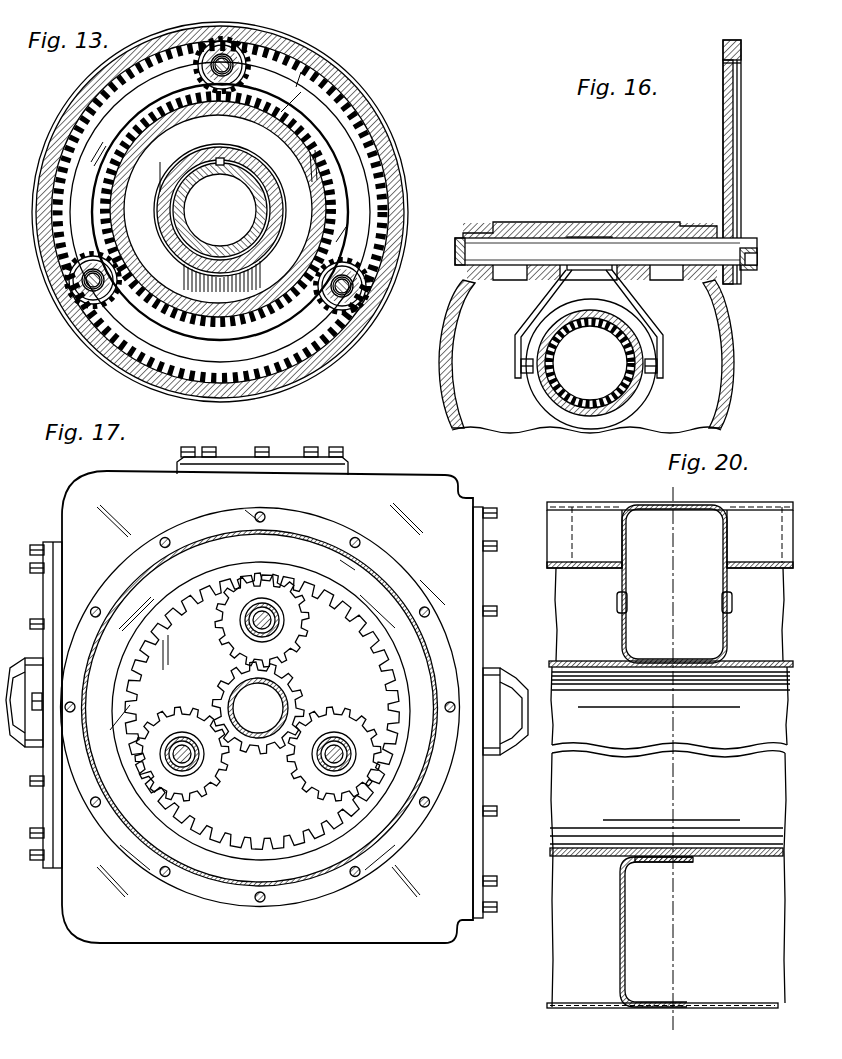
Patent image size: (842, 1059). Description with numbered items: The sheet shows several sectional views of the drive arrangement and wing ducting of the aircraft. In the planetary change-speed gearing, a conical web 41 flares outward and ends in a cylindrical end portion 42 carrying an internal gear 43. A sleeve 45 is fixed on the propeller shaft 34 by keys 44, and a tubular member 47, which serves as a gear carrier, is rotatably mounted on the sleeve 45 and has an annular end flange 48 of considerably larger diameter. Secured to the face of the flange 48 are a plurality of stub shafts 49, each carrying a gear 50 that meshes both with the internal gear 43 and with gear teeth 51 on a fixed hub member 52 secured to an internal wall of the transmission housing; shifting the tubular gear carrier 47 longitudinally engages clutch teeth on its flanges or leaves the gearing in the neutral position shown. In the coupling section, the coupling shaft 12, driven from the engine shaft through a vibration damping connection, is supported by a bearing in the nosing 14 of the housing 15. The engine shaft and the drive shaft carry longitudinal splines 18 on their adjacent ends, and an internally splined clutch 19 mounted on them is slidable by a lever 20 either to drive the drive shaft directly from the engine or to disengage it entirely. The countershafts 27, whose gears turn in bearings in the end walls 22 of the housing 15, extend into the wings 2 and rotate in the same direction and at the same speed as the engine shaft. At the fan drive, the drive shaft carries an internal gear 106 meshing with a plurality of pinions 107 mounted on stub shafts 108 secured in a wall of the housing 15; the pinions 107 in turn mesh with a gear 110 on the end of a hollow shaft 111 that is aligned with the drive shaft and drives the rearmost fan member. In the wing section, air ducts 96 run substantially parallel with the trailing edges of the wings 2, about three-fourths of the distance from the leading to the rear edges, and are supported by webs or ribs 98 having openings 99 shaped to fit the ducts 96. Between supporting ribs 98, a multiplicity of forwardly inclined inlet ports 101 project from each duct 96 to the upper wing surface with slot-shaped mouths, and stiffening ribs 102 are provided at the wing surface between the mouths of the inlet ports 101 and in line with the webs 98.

In FIG. 20, the wings 2 is at (750, 502).
In FIG. 16, the coupling shaft section 12 is at (560, 343).
In FIG. 16, the nosing 14 is at (439, 378).
In FIG. 17, the housing 15 is at (118, 930).
In FIG. 16, the longitudinal splines 18 is at (635, 341).
In FIG. 20, the longitudinal splines 18 is at (673, 495).
In FIG. 16, the internally splined clutch 19 is at (633, 397).
In FIG. 16, the lever 20 is at (725, 166).
In FIG. 17, the end walls 22 is at (48, 870).
In FIG. 17, the countershafts 27 is at (20, 748).
In FIG. 13, the propeller shaft 34 is at (198, 183).
In FIG. 13, the conical web 41 is at (360, 138).
In FIG. 13, the cylindrical end portion 42 is at (80, 88).
In FIG. 13, the internal gear 43 is at (322, 83).
In FIG. 13, the keys 44 is at (220, 158).
In FIG. 13, the sleeve 45 is at (247, 155).
In FIG. 13, the tubular member 47 is at (283, 208).
In FIG. 13, the annular end flange 48 is at (350, 162).
In FIG. 13, the stub shafts 49 is at (210, 68).
In FIG. 13, the gear 50 is at (250, 63).
In FIG. 13, the gear teeth 51 is at (260, 317).
In FIG. 13, the fixed hub member 52 is at (193, 320).
In FIG. 20, the air ducts 96 is at (671, 834).
In FIG. 20, the webs or ribs 98 is at (626, 932).
In FIG. 20, the openings 99 is at (676, 862).
In FIG. 20, the inlet ports 101 is at (557, 547).
In FIG. 20, the stiffening ribs 102 is at (703, 516).
In FIG. 17, the internal gear 106 is at (295, 577).
In FIG. 17, the pinions 107 is at (309, 621).
In FIG. 17, the stub shafts 108 is at (253, 618).
In FIG. 17, the gear 110 is at (283, 663).
In FIG. 17, the hollow shaft 111 is at (240, 692).